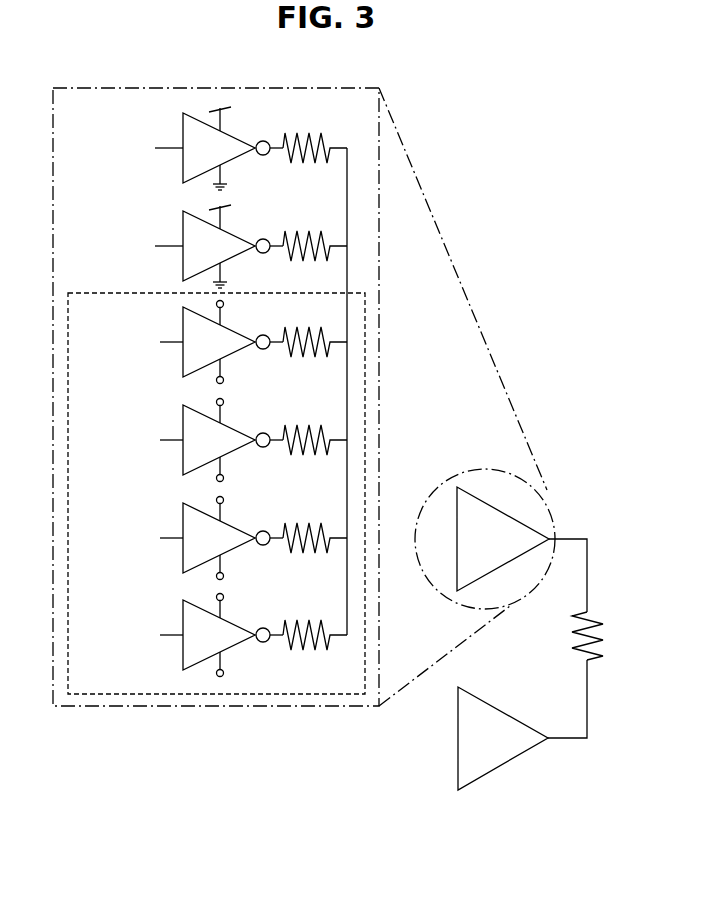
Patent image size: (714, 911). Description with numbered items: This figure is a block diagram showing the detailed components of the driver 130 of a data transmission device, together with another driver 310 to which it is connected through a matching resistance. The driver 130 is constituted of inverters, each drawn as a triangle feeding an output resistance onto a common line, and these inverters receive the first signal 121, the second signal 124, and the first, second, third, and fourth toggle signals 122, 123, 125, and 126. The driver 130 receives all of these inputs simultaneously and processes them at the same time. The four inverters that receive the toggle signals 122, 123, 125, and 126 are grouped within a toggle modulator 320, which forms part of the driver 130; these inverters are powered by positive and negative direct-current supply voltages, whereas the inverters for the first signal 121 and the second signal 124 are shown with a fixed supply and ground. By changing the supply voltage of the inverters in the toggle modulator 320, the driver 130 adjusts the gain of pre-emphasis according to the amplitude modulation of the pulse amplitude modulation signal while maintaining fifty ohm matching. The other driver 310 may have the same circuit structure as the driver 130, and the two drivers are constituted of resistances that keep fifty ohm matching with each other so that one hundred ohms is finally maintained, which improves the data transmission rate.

The first signal 121 is at (228, 148).
The second signal 124 is at (225, 246).
The first toggle signal 122 is at (211, 343).
The second toggle signal 123 is at (211, 441).
The third toggle signal 125 is at (211, 539).
The fourth toggle signal 126 is at (211, 636).
The toggle modulator 320 is at (216, 537).
The driver 130 is at (501, 540).
The another driver 310 is at (522, 725).